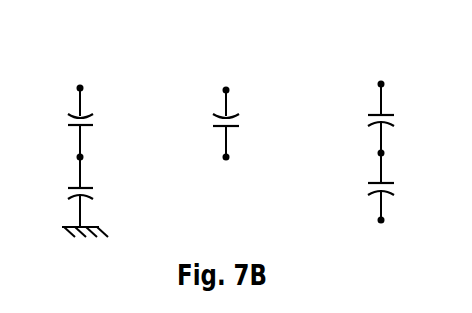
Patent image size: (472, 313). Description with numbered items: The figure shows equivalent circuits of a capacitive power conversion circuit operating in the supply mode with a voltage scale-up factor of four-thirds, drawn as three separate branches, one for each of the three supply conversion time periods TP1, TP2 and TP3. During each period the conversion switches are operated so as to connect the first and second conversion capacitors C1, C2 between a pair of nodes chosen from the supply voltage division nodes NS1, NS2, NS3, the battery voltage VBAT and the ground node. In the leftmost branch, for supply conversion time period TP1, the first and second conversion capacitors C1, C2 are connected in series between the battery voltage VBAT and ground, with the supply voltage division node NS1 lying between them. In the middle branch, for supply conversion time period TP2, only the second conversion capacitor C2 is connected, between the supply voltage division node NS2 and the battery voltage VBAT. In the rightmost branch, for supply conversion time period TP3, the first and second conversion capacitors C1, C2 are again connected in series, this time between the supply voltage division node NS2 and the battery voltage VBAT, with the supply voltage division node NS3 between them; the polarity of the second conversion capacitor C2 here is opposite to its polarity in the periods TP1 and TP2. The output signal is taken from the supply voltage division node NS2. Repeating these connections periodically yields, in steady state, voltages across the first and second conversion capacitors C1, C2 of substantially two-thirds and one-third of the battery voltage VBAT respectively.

The supply conversion time period TP1 is at (85, 127).
The supply conversion time period TP2 is at (217, 87).
The supply conversion time period TP3 is at (378, 116).
The first conversion capacitor C1 is at (244, 160).
The second conversion capacitor C2 is at (244, 158).
The battery voltage VBAT is at (232, 158).
The supply voltage division node NS1 is at (59, 161).
The supply voltage division node NS2 is at (304, 77).
The supply voltage division node NS3 is at (361, 157).